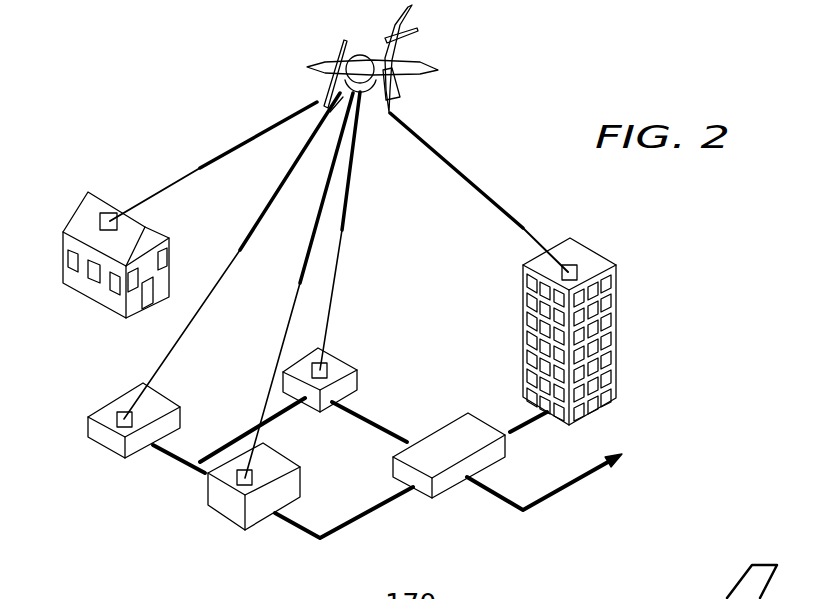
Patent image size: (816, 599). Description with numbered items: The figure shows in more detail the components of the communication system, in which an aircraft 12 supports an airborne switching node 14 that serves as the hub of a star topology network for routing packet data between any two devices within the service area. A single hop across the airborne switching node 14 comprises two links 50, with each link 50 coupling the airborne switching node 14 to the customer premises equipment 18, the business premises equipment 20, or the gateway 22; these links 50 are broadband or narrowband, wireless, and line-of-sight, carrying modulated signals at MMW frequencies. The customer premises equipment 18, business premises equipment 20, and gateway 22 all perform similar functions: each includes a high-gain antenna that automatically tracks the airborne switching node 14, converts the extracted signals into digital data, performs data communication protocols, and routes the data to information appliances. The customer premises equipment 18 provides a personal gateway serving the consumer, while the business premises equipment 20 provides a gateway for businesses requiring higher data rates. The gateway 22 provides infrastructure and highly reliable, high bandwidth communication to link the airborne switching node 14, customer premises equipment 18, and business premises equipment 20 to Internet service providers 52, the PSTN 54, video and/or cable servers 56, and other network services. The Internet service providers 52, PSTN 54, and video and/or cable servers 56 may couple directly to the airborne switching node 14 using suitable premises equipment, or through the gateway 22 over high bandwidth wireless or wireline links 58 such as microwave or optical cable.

The aircraft 12 is at (436, 76).
The airborne switching node 14 is at (360, 53).
The customer premises equipment 18 is at (77, 203).
The business premises equipment 20 is at (588, 256).
The gateway 22 is at (345, 358).
The link 50 is at (215, 158).
The Internet service provider 52 is at (223, 517).
The PSTN 54 is at (448, 490).
The video and/or cable server 56 is at (103, 447).
The high bandwidth wireless or wireline link 58 is at (247, 430).